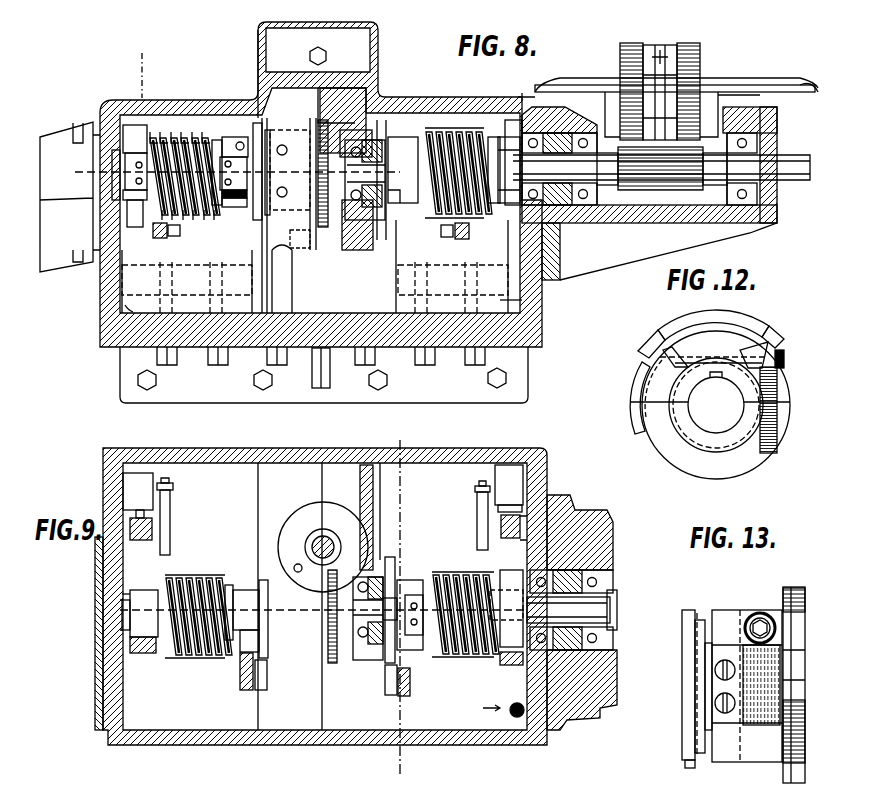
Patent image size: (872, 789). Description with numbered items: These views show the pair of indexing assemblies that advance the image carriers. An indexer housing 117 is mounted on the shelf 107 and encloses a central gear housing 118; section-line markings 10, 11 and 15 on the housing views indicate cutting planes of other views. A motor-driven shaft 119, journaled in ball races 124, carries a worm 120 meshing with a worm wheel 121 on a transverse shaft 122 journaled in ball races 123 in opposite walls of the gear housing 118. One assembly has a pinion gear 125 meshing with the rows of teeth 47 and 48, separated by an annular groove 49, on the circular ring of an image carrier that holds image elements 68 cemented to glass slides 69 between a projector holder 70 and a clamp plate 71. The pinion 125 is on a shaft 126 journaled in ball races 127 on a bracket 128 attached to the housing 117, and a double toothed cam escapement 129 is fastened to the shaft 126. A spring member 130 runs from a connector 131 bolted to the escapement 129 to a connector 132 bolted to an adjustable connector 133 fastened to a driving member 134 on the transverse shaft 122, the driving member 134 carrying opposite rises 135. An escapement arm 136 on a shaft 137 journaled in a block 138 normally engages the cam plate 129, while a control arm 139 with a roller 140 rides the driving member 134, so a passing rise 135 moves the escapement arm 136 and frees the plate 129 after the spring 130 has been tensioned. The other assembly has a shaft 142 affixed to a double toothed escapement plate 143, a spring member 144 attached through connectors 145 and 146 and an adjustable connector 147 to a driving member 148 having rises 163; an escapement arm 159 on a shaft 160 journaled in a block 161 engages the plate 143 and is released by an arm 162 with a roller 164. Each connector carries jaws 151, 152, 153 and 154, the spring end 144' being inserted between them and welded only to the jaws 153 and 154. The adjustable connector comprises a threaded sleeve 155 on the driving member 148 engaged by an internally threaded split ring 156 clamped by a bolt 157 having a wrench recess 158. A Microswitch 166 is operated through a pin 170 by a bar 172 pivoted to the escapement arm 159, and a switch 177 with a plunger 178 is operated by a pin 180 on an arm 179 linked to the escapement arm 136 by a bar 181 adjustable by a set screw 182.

In FIG. 9, the section line 10 is at (398, 434).
In FIG. 8, the axis line 11 is at (235, 211).
In FIG. 8, the section line 15 is at (160, 379).
In FIG. 8, the row of teeth 47 is at (622, 58).
In FIG. 8, the row of teeth 48 is at (700, 58).
In FIG. 8, the annular groove 49 is at (665, 50).
In FIG. 8, the image elements 68 is at (522, 96).
In FIG. 8, the glass slides 69 is at (808, 85).
In FIG. 8, the projector holder 70 is at (562, 85).
In FIG. 8, the clamp plate 71 is at (750, 93).
In FIG. 8, the shelf 107 is at (212, 395).
In FIG. 8, the indexer housing 117 is at (398, 98).
In FIG. 9, the indexer housing 117 is at (542, 472).
In FIG. 8, the central gear housing 118 is at (332, 135).
In FIG. 9, the central gear housing 118 is at (258, 488).
In FIG. 8, the shaft 119 is at (315, 385).
In FIG. 9, the shaft 119 is at (322, 520).
In FIG. 9, the worm 120 is at (330, 540).
In FIG. 8, the worm wheel 121 is at (323, 123).
In FIG. 9, the worm wheel 121 is at (335, 665).
In FIG. 8, the transverse shaft 122 is at (352, 112).
In FIG. 9, the transverse shaft 122 is at (362, 645).
In FIG. 8, the ball races 123 is at (312, 200).
In FIG. 8, the ball races 124 is at (290, 245).
In FIG. 8, the pinion gear 125 is at (648, 185).
In FIG. 8, the shaft 126 is at (603, 185).
In FIG. 9, the shaft 126 is at (612, 608).
In FIG. 8, the ball races 127 is at (585, 120).
In FIG. 9, the ball races 127 is at (612, 583).
In FIG. 8, the bracket 128 is at (750, 228).
In FIG. 9, the bracket 128 is at (612, 515).
In FIG. 8, the double toothed cam escapement 129 is at (495, 145).
In FIG. 9, the double toothed cam escapement 129 is at (500, 572).
In FIG. 8, the spring member 130 is at (433, 130).
In FIG. 9, the spring member 130 is at (470, 645).
In FIG. 8, the connector 131 is at (478, 140).
In FIG. 8, the connector 132 is at (404, 175).
In FIG. 9, the adjustable connector 133 is at (412, 640).
In FIG. 8, the driving member 134 is at (355, 240).
In FIG. 9, the driving member 134 is at (396, 572).
In FIG. 9, the rises 135 is at (388, 565).
In FIG. 8, the escapement arm 136 is at (496, 262).
In FIG. 9, the escapement arm 136 is at (512, 665).
In FIG. 8, the shaft 137 is at (525, 300).
In FIG. 8, the block 138 is at (445, 280).
In FIG. 8, the control arm 139 is at (398, 262).
In FIG. 9, the control arm 139 is at (412, 692).
In FIG. 9, the roller 140 is at (392, 698).
In FIG. 8, the shaft 142 is at (120, 112).
In FIG. 9, the shaft 142 is at (120, 612).
In FIG. 8, the double toothed escapement plate 143 is at (136, 127).
In FIG. 9, the double toothed escapement plate 143 is at (140, 598).
In FIG. 8, the spring member 144 is at (185, 146).
In FIG. 9, the spring member 144 is at (198, 634).
In FIG. 12, the spring member 144 is at (629, 397).
In FIG. 13, the spring member 144 is at (672, 689).
In FIG. 12, the end of spring member 144' is at (713, 317).
In FIG. 8, the connector 145 is at (150, 155).
In FIG. 9, the connector 145 is at (122, 594).
In FIG. 8, the connector 146 is at (230, 137).
In FIG. 9, the connector 146 is at (230, 585).
In FIG. 8, the adjustable connector 147 is at (237, 137).
In FIG. 9, the adjustable connector 147 is at (240, 630).
In FIG. 8, the driving member 148 is at (256, 123).
In FIG. 9, the driving member 148 is at (262, 580).
In FIG. 13, the driving member 148 is at (792, 669).
In FIG. 12, the jaw 151 is at (658, 340).
In FIG. 13, the jaw 151 is at (684, 628).
In FIG. 12, the jaw 152 is at (665, 358).
In FIG. 12, the jaw 153 is at (770, 330).
In FIG. 12, the jaw 154 is at (750, 345).
In FIG. 13, the threaded sleeve 155 is at (756, 727).
In FIG. 12, the split ring 156 is at (700, 470).
In FIG. 13, the split ring 156 is at (722, 610).
In FIG. 13, the bolt 157 is at (755, 615).
In FIG. 12, the wrench recess 158 is at (784, 356).
In FIG. 13, the wrench recess 158 is at (767, 620).
In FIG. 8, the escapement arm 159 is at (140, 262).
In FIG. 9, the escapement arm 159 is at (142, 650).
In FIG. 8, the shaft 160 is at (128, 308).
In FIG. 8, the block 161 is at (203, 280).
In FIG. 9, the arm 162 is at (243, 680).
In FIG. 13, the rises 163 is at (795, 588).
In FIG. 9, the roller 164 is at (262, 690).
In FIG. 9, the Microswitch 166 is at (125, 483).
In FIG. 9, the pin 170 is at (150, 522).
In FIG. 8, the bar 172 is at (170, 233).
In FIG. 9, the bar 172 is at (172, 542).
In FIG. 9, the switch 177 is at (508, 468).
In FIG. 9, the plunger 178 is at (520, 510).
In FIG. 9, the arm 179 is at (512, 540).
In FIG. 9, the pin 180 is at (520, 520).
In FIG. 8, the bar 181 is at (455, 230).
In FIG. 9, the bar 181 is at (477, 528).
In FIG. 9, the set screw 182 is at (478, 494).